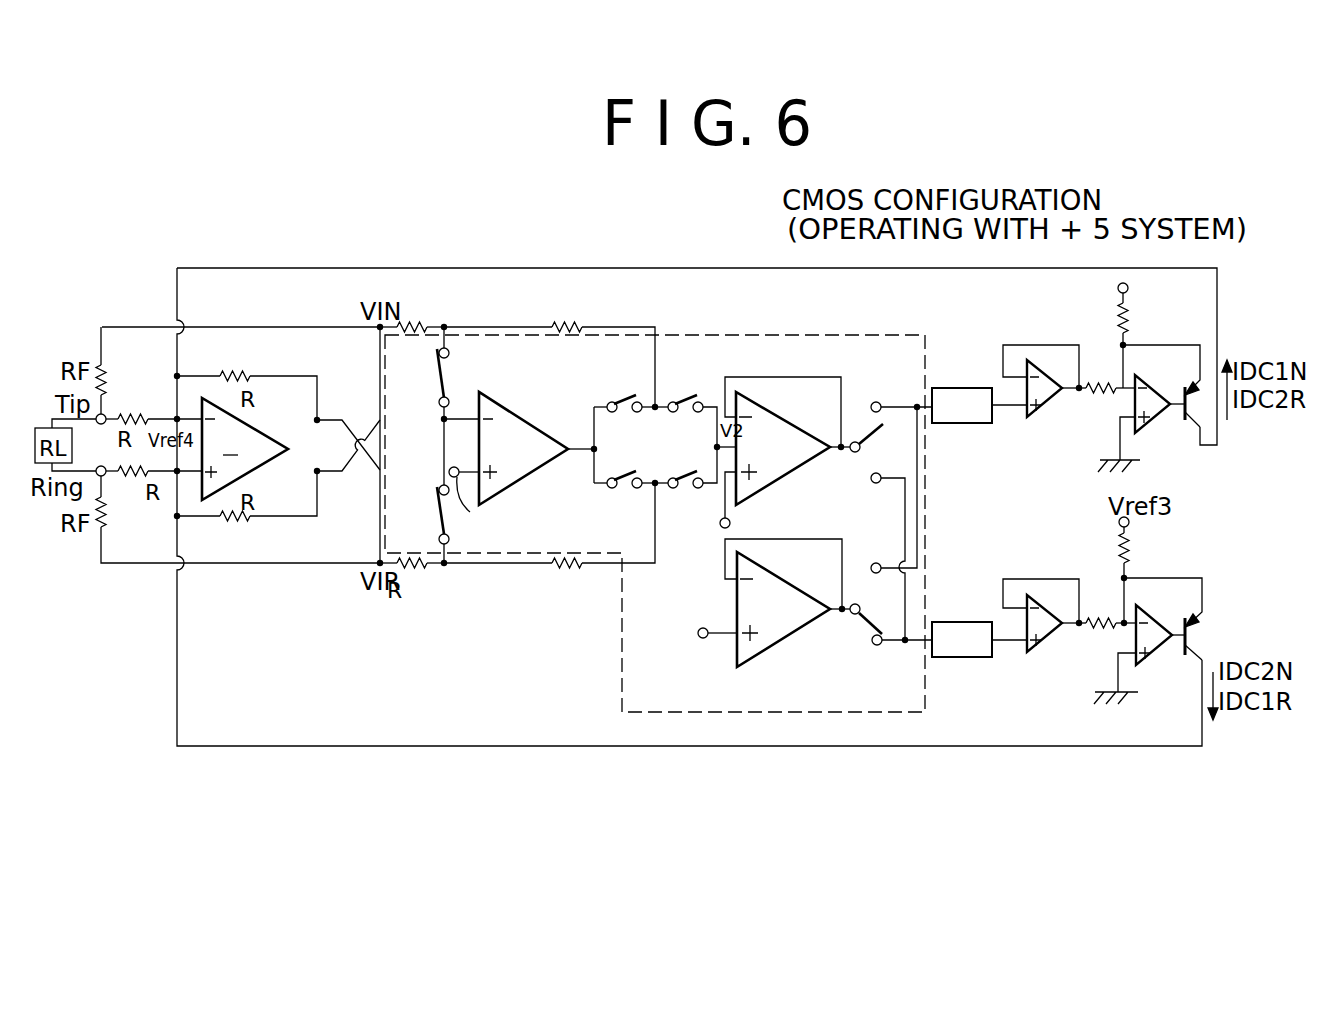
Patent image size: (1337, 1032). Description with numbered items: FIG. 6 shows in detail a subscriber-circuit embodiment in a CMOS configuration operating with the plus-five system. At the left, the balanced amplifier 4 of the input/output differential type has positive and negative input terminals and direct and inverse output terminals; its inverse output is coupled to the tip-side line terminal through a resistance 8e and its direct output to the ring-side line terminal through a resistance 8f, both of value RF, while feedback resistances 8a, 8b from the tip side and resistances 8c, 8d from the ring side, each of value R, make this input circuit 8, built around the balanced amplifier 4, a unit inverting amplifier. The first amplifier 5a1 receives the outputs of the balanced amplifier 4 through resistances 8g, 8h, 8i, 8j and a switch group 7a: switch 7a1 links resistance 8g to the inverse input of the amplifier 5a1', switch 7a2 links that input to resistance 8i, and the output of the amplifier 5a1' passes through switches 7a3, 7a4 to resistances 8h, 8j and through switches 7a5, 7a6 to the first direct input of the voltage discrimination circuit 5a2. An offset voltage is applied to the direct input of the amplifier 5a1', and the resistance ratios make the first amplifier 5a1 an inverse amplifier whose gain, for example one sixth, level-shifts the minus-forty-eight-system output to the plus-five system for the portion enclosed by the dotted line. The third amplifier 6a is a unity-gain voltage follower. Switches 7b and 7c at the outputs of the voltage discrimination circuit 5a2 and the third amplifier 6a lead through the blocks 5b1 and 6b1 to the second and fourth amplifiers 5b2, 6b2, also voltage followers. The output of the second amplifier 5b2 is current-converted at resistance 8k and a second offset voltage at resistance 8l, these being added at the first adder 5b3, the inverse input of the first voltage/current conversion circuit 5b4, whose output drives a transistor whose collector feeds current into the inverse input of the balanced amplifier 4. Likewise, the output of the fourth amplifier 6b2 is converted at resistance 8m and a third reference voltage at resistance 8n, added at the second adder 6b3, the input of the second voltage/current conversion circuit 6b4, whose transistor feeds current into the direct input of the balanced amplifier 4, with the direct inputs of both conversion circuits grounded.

The balanced amplifier 4 is at (237, 417).
The CMOS input circuit 8 is at (135, 584).
The resistance 8a is at (142, 408).
The resistance 8b is at (233, 373).
The resistance 8c is at (154, 508).
The resistance 8d is at (240, 520).
The resistance 8e is at (100, 362).
The resistance 8f is at (92, 528).
The resistance 8g is at (418, 327).
The resistance 8h is at (577, 323).
The resistance 8i is at (424, 566).
The resistance 8j is at (568, 570).
The resistance 8k is at (1105, 397).
The resistance 8l is at (1130, 318).
The resistance 8m is at (1098, 632).
The resistance 8n is at (1130, 555).
The first amplifier 5a1 is at (655, 496).
The amplifier 5a1' is at (539, 448).
The voltage discrimination circuit 5a2 is at (813, 413).
The low pass filter 5b1 is at (958, 423).
The second amplifier 5b2 is at (1035, 413).
The first adder 5b3 is at (1098, 357).
The first voltage/current conversion circuit 5b4 is at (1158, 417).
The third amplifier 6a is at (788, 638).
The low pass filter 6b1 is at (970, 660).
The fourth amplifier 6b2 is at (1043, 643).
The second adder 6b3 is at (1108, 598).
The second voltage/current conversion circuit 6b4 is at (1150, 653).
The switch group 7a is at (562, 445).
The switch 7a1 is at (437, 405).
The switch 7a2 is at (433, 508).
The switch 7a3 is at (617, 413).
The switch 7a4 is at (613, 492).
The switch 7a5 is at (673, 393).
The switch 7a6 is at (674, 490).
The switch 7b is at (848, 452).
The switch 7c is at (855, 617).